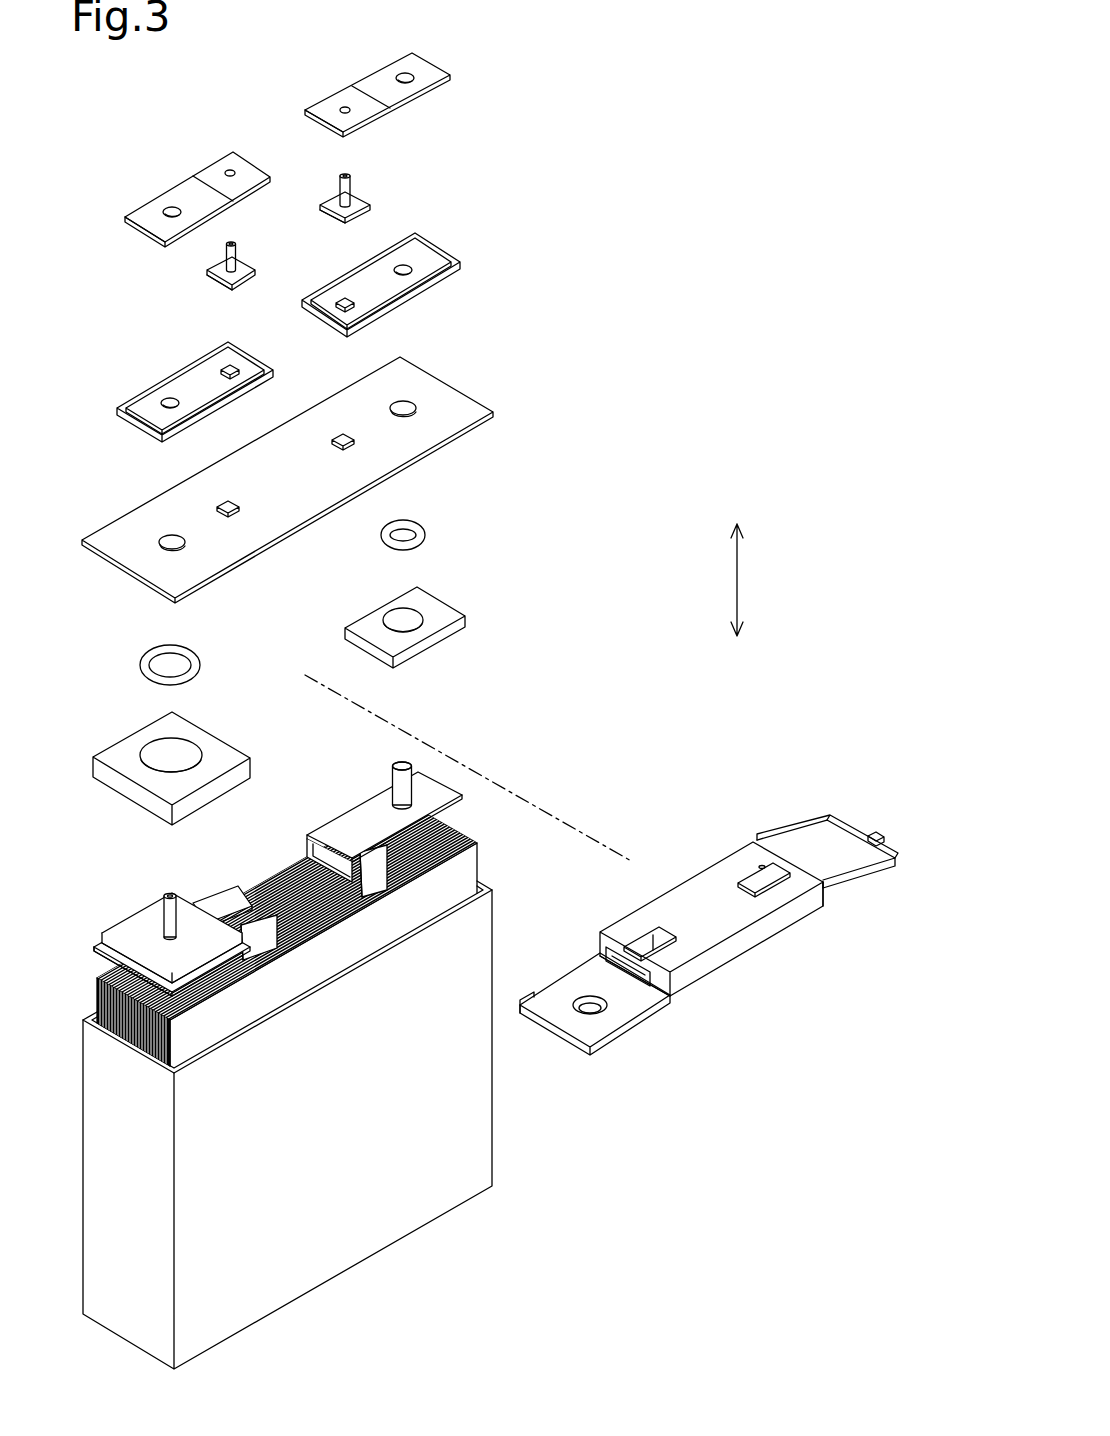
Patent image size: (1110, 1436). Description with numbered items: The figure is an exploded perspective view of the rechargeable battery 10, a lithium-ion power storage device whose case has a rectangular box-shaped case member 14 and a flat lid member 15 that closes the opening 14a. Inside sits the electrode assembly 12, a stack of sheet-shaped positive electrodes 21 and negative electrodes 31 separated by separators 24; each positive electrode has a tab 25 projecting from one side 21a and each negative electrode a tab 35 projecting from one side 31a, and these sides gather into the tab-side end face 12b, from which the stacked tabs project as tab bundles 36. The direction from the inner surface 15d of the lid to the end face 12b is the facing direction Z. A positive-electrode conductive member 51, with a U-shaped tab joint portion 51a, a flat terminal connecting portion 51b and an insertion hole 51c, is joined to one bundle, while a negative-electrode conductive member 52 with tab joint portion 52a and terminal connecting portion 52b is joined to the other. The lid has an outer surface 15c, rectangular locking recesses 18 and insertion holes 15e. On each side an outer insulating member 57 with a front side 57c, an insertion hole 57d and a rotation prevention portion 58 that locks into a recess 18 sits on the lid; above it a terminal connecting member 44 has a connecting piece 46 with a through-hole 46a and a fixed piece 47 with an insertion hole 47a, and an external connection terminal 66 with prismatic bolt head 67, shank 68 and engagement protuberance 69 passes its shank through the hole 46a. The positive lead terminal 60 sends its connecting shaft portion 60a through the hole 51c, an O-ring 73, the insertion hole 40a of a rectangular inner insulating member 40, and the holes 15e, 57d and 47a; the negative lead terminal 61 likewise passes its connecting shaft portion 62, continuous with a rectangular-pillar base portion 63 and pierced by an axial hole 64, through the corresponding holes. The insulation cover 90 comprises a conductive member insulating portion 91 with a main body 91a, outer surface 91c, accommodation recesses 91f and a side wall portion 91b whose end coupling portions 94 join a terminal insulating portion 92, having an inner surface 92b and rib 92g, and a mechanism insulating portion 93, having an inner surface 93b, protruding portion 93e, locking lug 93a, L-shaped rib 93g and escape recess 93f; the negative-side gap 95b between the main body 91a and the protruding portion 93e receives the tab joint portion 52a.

The rechargeable battery 10 is at (630, 258).
The electrode assembly 12 is at (314, 912).
The tab-side end face 12b is at (345, 955).
The case member 14 is at (269, 1125).
The opening 14a is at (205, 1058).
The lid member 15 is at (292, 478).
The outer surface 15c is at (315, 403).
The inner surface 15d is at (335, 512).
The insertion hole 15e is at (160, 540).
The locking recess 18 is at (243, 506).
The positive electrode 21 is at (470, 835).
The side of the positive electrode 21a is at (430, 895).
The separator 24 is at (480, 835).
The tab 25 is at (365, 905).
The negative electrode 31 is at (176, 1070).
The side of the negative electrode 31a is at (210, 998).
The tab 35 is at (260, 958).
The tab bundle 36 is at (296, 830).
The inner insulating member 40 is at (298, 714).
The insertion hole 40a is at (400, 625).
The terminal connecting member 44 is at (305, 146).
The connecting piece 46 is at (252, 163).
The through-hole 46a is at (254, 121).
The fixed piece 47 is at (135, 205).
The insertion hole 47a is at (168, 207).
The positive-electrode conductive member 51 is at (394, 797).
The tab joint portion 51a is at (318, 830).
The terminal connecting portion 51b is at (428, 790).
The insertion hole 51c is at (340, 790).
The negative-electrode conductive member 52 is at (140, 915).
The tab joint portion 52a is at (197, 900).
The terminal connecting portion 52b is at (94, 952).
The outer insulating member 57 is at (273, 323).
The front side 57c is at (175, 388).
The insertion hole 57d is at (157, 405).
The rotation prevention portion 58 is at (240, 372).
The positive lead terminal 60 is at (398, 755).
The connecting shaft portion 60a is at (408, 766).
The negative lead terminal 61 is at (141, 871).
The connecting shaft portion 62 is at (142, 892).
The base portion 63 is at (160, 914).
The axial hole 64 is at (172, 961).
The external connection terminal 66 is at (226, 246).
The bolt head 67 is at (265, 231).
The shank 68 is at (232, 243).
The engagement protuberance 69 is at (222, 283).
The O-ring 73 is at (427, 528).
The insulation cover 90 is at (701, 935).
The conductive member insulating portion 91 is at (692, 908).
The insulating portion main body 91a is at (665, 895).
The side wall portion 91b is at (752, 955).
The outer surface 91c is at (628, 925).
The accommodation recess 91f is at (765, 866).
The terminal insulating portion 92 is at (831, 863).
The inner surface 92b is at (813, 850).
The rib 92g is at (878, 838).
The mechanism insulating portion 93 is at (596, 990).
The locking lug 93a is at (602, 942).
The inner surface 93b is at (530, 1020).
The protruding portion 93e is at (640, 985).
The escape recess 93f is at (583, 1015).
The rib 93g is at (528, 1000).
The coupling portion 94 is at (823, 905).
The negative-side gap 95b is at (630, 965).
The facing direction Z is at (737, 577).